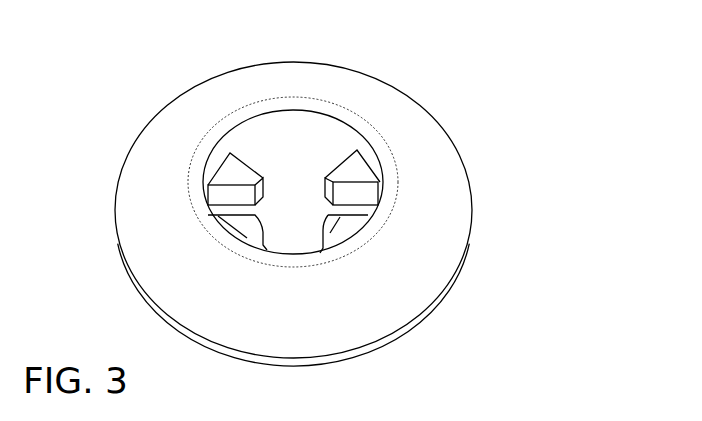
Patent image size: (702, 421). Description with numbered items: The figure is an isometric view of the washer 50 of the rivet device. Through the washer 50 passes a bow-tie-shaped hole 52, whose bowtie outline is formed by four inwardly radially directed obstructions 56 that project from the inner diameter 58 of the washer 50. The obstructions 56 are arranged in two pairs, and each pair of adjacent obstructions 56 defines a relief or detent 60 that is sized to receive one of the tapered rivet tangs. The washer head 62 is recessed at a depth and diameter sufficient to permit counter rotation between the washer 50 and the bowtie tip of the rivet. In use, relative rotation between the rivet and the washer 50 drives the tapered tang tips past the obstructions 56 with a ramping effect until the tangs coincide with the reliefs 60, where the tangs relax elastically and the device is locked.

The washer 50 is at (477, 352).
The bow-tie-shaped hole 52 is at (297, 183).
The obstruction 56 is at (358, 165).
The inner diameter 58 is at (345, 135).
The relief 60 is at (232, 195).
The washer head 62 is at (247, 138).